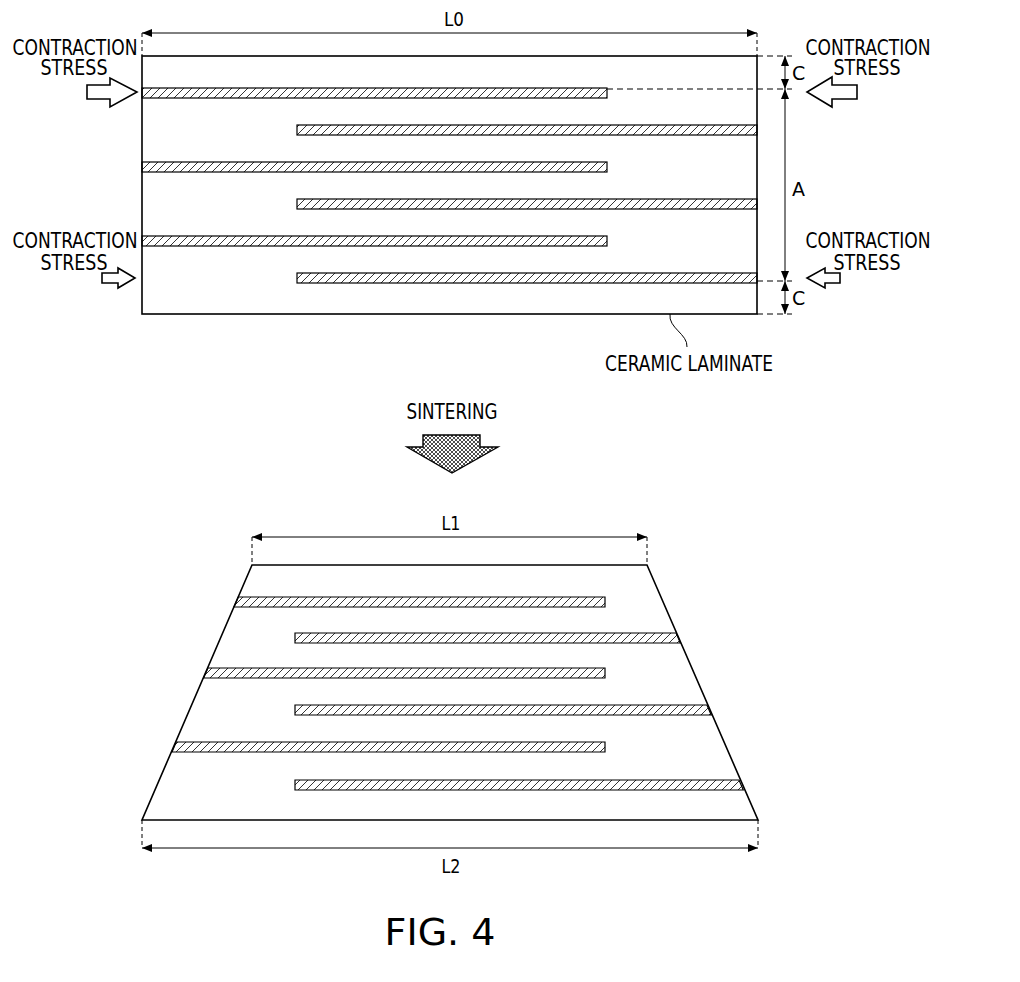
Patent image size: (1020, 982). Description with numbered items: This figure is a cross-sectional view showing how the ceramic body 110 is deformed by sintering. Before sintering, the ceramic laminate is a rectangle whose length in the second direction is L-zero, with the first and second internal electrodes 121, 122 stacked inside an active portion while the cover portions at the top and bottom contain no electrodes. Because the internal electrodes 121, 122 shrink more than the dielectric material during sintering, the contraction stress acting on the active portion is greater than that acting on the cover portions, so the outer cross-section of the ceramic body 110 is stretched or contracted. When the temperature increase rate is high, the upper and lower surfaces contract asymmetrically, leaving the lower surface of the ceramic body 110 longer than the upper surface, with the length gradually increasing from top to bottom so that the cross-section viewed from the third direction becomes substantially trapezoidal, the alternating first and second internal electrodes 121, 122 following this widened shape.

The ceramic body 110 is at (357, 620).
The first internal electrode 121 is at (280, 600).
The second internal electrode 122 is at (620, 638).